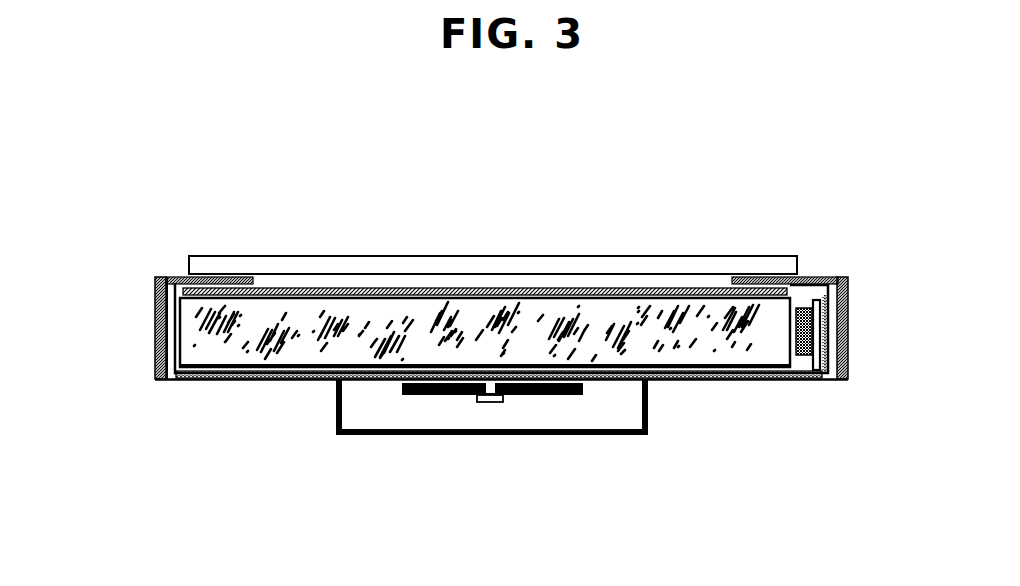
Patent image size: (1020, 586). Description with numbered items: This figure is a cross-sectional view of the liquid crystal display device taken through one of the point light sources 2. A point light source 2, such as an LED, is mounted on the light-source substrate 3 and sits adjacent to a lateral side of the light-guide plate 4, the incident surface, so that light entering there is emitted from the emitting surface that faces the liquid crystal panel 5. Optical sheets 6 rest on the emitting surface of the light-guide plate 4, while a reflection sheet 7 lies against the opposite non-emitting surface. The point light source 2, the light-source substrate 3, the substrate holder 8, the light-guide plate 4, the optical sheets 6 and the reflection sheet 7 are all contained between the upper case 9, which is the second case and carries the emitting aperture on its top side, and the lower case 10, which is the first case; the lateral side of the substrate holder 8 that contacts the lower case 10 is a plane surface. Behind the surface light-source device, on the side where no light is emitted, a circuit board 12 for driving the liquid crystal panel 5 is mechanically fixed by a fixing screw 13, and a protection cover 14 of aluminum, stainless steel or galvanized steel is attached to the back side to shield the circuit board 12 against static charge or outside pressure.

The point light source 2 is at (795, 348).
The light-source substrate 3 is at (817, 367).
The light-guide plate 4 is at (347, 323).
The liquid crystal panel 5 is at (680, 267).
The optical sheets 6 is at (485, 291).
The reflection sheet 7 is at (197, 372).
The substrate holder 8 is at (833, 383).
The upper case 9 is at (177, 278).
The lower case 10 is at (273, 380).
The circuit board 12 is at (422, 395).
The fixing screw 13 is at (482, 405).
The protection cover 14 is at (352, 437).